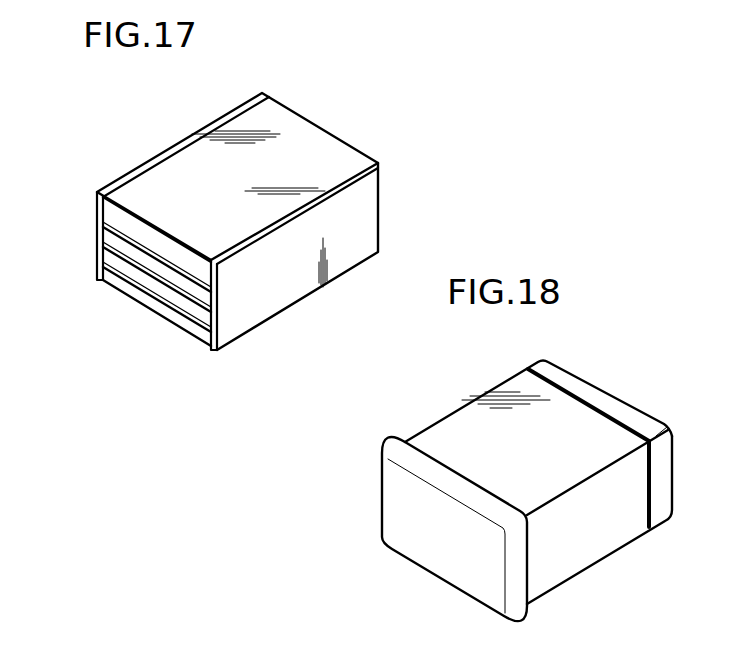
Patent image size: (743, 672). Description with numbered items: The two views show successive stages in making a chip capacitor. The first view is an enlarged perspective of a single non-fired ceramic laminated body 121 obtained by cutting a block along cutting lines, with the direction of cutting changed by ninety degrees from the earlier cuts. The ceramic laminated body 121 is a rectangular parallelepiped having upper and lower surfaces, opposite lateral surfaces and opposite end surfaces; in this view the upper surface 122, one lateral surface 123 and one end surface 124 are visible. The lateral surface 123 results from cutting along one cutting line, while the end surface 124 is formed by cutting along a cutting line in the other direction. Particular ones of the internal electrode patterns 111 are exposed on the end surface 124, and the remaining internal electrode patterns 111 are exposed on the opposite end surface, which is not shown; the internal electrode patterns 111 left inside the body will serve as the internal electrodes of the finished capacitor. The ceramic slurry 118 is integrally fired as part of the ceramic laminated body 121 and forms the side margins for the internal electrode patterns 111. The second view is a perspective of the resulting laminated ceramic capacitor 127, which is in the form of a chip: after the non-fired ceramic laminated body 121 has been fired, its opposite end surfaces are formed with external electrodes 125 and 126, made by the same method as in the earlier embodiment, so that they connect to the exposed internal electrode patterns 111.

In FIG. 17, the internal electrode patterns 111 is at (100, 273).
In FIG. 17, the ceramic slurry 118 is at (229, 118).
In FIG. 17, the ceramic laminated body 121 is at (338, 102).
In FIG. 18, the ceramic laminated body 121 is at (472, 400).
In FIG. 17, the upper surface 122 is at (166, 176).
In FIG. 17, the lateral surface 123 is at (275, 300).
In FIG. 17, the end surface 124 is at (142, 299).
In FIG. 18, the external electrode 125 is at (425, 553).
In FIG. 18, the external electrode 126 is at (628, 398).
In FIG. 18, the laminated ceramic capacitor 127 is at (590, 362).